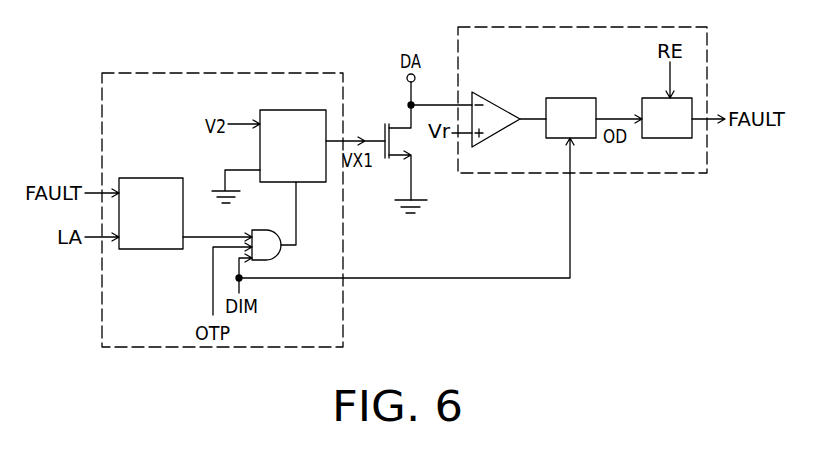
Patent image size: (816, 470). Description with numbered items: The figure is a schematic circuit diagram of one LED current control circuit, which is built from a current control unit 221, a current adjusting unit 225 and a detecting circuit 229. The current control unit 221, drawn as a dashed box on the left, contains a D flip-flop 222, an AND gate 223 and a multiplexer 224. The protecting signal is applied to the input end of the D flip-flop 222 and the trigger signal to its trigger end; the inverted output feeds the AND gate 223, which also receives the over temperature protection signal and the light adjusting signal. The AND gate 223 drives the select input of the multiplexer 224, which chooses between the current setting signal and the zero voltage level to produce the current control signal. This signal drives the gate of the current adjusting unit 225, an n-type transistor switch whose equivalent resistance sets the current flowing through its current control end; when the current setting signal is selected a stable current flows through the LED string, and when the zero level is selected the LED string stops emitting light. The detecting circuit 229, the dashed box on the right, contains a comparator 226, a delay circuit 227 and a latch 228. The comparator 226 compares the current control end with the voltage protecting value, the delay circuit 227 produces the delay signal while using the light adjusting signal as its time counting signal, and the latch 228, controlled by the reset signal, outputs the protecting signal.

The current control unit 221 is at (105, 82).
The D flip-flop 222 is at (142, 177).
The AND gate 223 is at (272, 258).
The multiplexer 224 is at (305, 111).
The current adjusting unit 225 is at (393, 126).
The comparator 226 is at (484, 95).
The delay circuit 227 is at (588, 129).
The latch 228 is at (684, 129).
The detecting circuit 229 is at (702, 36).